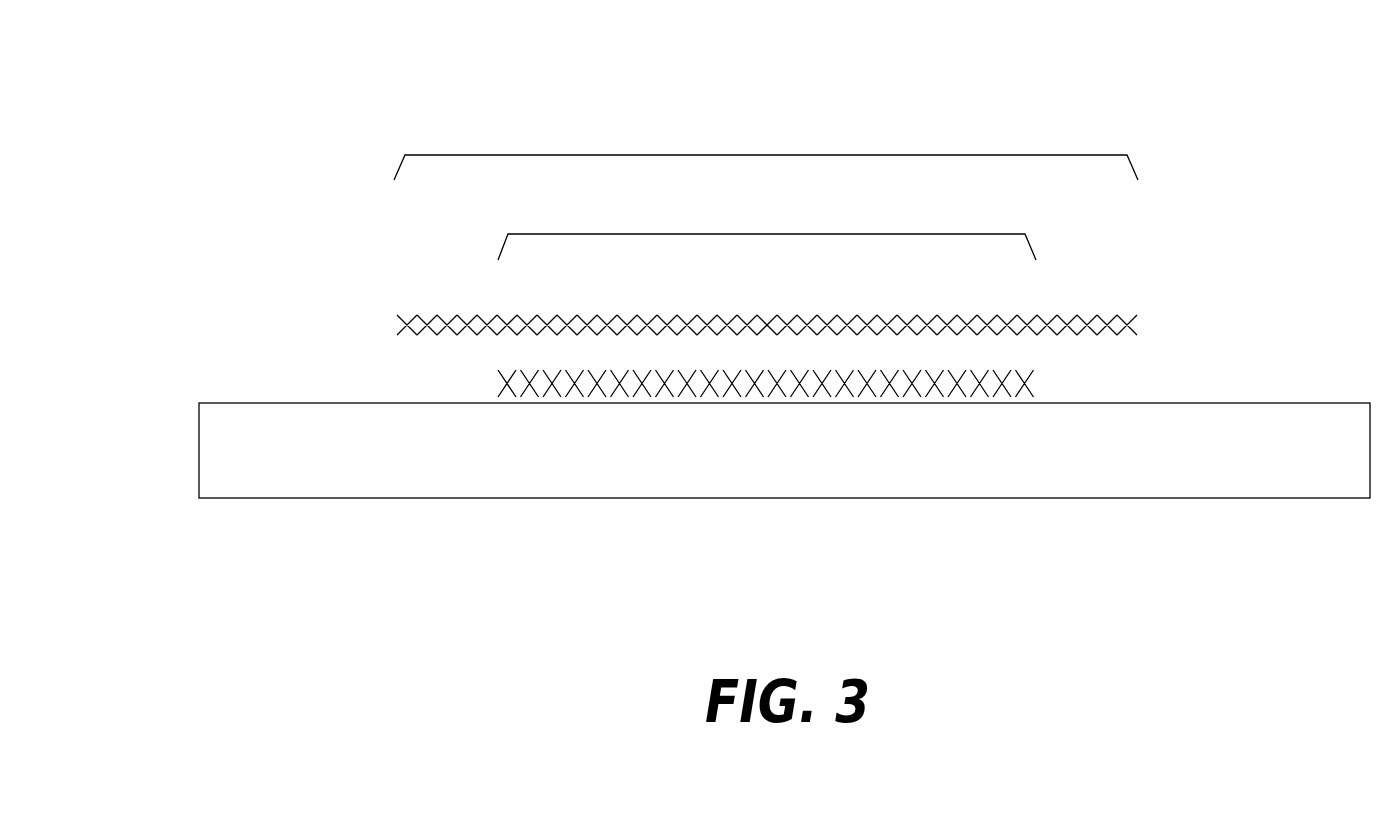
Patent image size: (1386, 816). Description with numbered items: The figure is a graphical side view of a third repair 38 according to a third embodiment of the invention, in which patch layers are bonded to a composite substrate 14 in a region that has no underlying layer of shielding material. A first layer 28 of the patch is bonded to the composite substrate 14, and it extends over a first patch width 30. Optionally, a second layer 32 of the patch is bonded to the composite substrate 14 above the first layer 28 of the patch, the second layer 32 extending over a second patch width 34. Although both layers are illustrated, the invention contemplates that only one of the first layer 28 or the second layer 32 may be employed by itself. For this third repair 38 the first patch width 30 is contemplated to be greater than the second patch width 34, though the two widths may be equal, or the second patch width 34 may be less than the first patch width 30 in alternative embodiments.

The composite substrate 14 is at (1023, 483).
The first layer of the patch 28 is at (590, 385).
The first patch width 30 is at (770, 234).
The second layer of the patch 32 is at (397, 326).
The second patch width 34 is at (770, 155).
The third repair 38 is at (1198, 142).